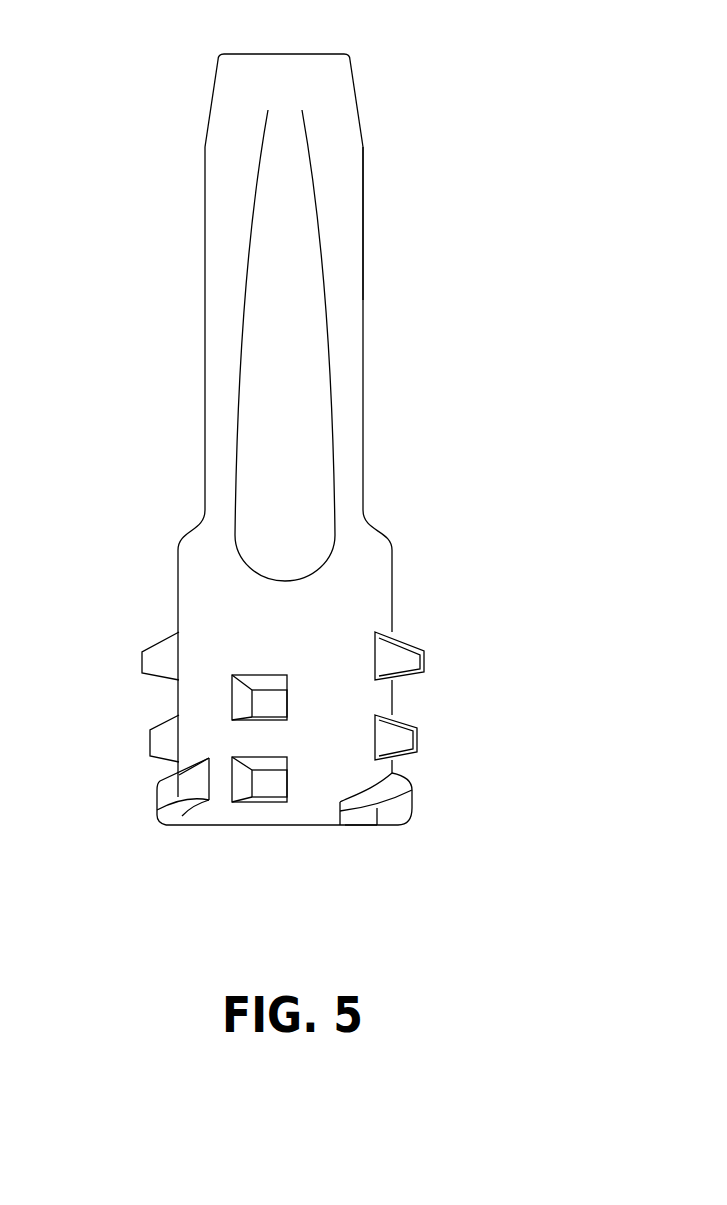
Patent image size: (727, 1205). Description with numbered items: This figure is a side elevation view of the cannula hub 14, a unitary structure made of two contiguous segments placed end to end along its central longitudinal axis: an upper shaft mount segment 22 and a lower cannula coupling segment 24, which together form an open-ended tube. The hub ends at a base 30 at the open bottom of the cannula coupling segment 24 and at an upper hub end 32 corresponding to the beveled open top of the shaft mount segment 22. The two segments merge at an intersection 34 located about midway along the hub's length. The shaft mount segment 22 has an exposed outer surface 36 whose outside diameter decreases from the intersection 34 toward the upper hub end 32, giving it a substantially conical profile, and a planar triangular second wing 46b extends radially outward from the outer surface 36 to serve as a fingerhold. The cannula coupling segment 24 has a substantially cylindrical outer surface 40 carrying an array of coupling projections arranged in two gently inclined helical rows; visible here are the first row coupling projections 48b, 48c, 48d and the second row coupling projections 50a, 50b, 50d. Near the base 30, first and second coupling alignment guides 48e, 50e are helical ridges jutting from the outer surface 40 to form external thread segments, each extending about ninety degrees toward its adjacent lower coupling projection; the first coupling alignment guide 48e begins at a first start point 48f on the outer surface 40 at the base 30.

The cannula hub 14 is at (482, 327).
The shaft mount segment 22 is at (360, 118).
The cannula coupling segment 24 is at (392, 583).
The base 30 is at (292, 826).
The upper hub end 32 is at (323, 53).
The intersection 34 is at (355, 535).
The outer surface 36 is at (340, 192).
The outer surface 40 is at (188, 698).
The second wing 46b is at (248, 282).
The first row coupling projection 48b is at (150, 738).
The first row coupling projection 48c is at (288, 700).
The first row coupling projection 48d is at (425, 640).
The first coupling alignment guide 48e is at (412, 802).
The first start point 48f is at (356, 812).
The second row coupling projection 50a is at (288, 778).
The second row coupling projection 50b is at (417, 740).
The second row coupling projection 50d is at (142, 662).
The second coupling alignment guide 50e is at (163, 815).